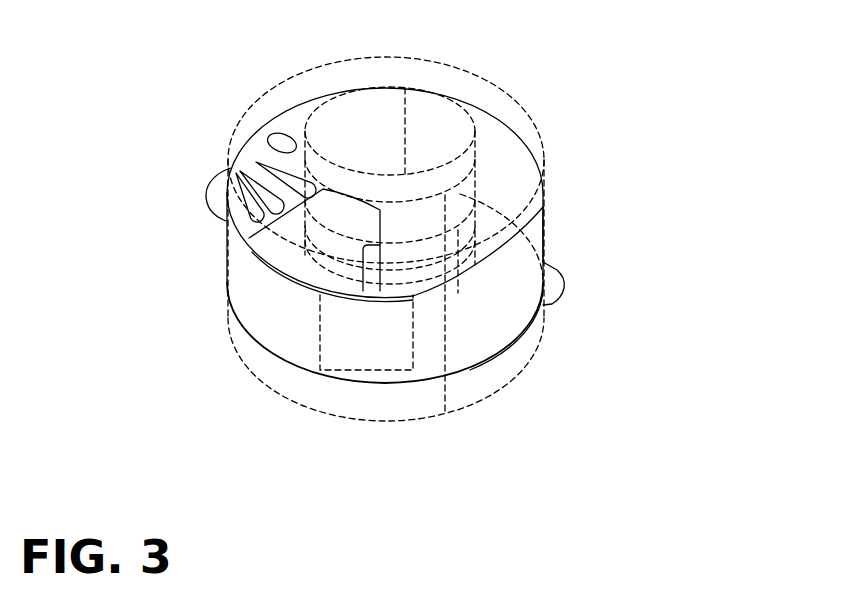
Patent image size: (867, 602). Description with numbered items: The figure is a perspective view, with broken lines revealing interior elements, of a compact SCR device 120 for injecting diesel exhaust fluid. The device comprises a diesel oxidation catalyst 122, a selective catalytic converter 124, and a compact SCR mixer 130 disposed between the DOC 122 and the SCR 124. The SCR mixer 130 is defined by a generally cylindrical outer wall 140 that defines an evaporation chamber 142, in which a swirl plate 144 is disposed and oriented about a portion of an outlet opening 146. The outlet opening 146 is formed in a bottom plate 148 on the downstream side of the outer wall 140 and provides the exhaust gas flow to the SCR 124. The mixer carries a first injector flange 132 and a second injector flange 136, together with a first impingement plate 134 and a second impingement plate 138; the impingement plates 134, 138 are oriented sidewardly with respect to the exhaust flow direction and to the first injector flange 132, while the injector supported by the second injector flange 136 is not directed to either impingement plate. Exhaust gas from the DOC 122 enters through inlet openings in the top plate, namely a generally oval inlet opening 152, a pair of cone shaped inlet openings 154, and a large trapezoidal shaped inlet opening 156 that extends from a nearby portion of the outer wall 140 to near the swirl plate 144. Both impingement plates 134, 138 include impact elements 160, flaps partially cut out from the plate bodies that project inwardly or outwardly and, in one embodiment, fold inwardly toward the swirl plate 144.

The compact SCR device 120 is at (200, 407).
The diesel oxidation catalyst 122 is at (523, 110).
The selective catalytic converter 124 is at (514, 391).
The compact SCR mixer 130 is at (222, 280).
The first injector flange 132 is at (212, 176).
The first impingement plate 134 is at (388, 355).
The second injector flange 136 is at (565, 291).
The second impingement plate 138 is at (447, 415).
The outer wall 140 is at (505, 307).
The evaporation chamber 142 is at (522, 172).
The swirl plate 144 is at (308, 105).
The outlet opening 146 is at (480, 80).
The bottom plate 148 is at (505, 343).
The oval inlet opening 152 is at (270, 135).
The cone shaped inlet openings 154 is at (262, 176).
The trapezoidal shaped inlet opening 156 is at (297, 268).
The impact elements 160 is at (543, 207).